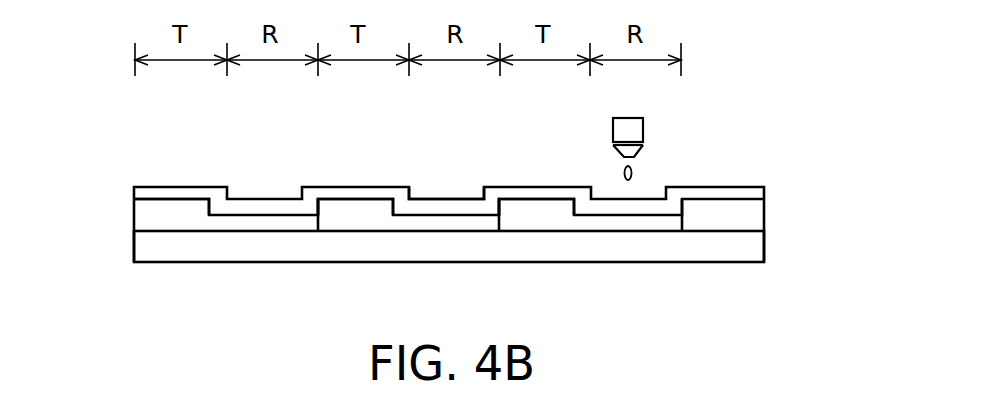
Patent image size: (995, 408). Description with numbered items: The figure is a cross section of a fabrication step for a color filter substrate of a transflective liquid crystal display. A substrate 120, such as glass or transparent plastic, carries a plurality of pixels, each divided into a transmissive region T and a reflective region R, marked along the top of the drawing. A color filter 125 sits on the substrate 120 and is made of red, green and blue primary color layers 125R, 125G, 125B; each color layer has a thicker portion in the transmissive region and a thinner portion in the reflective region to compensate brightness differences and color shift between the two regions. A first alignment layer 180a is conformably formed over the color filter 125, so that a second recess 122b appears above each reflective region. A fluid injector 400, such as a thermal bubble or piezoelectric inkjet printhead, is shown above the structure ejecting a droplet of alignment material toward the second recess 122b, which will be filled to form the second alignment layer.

The substrate 120 is at (750, 248).
The color filter 125 is at (124, 214).
The red primary color layer 125R is at (155, 222).
The green primary color layer 125G is at (380, 220).
The blue primary color layer 125B is at (593, 220).
The first alignment layer 180a is at (750, 192).
The second recess 122b is at (436, 186).
The fluid injector 400 is at (633, 132).